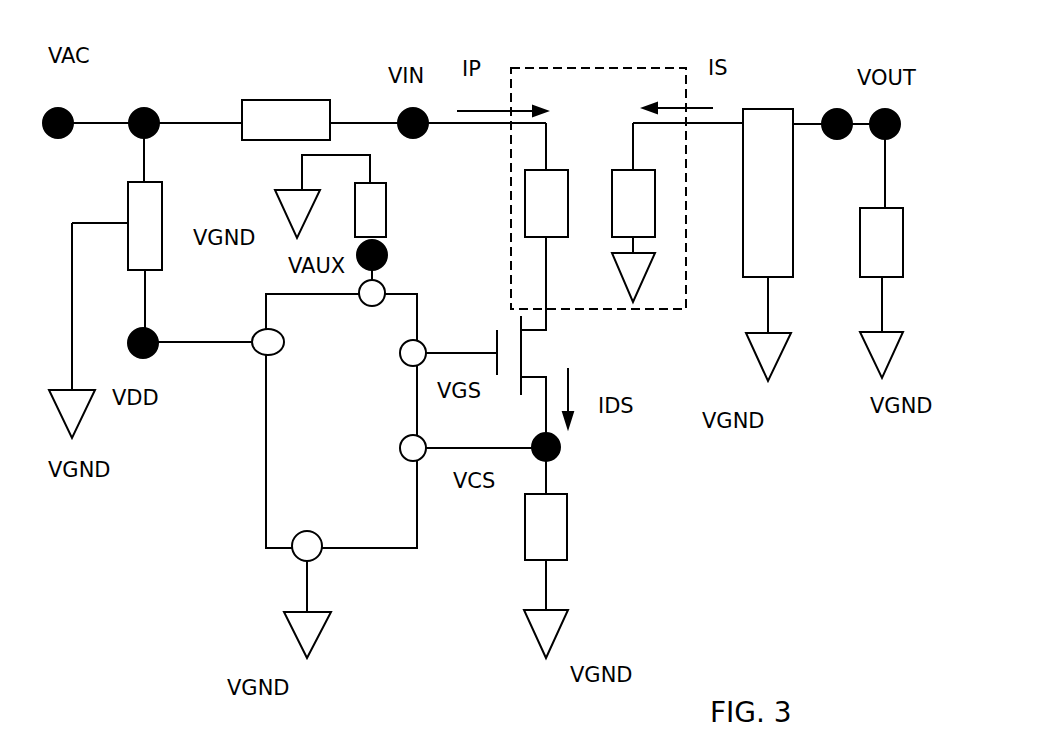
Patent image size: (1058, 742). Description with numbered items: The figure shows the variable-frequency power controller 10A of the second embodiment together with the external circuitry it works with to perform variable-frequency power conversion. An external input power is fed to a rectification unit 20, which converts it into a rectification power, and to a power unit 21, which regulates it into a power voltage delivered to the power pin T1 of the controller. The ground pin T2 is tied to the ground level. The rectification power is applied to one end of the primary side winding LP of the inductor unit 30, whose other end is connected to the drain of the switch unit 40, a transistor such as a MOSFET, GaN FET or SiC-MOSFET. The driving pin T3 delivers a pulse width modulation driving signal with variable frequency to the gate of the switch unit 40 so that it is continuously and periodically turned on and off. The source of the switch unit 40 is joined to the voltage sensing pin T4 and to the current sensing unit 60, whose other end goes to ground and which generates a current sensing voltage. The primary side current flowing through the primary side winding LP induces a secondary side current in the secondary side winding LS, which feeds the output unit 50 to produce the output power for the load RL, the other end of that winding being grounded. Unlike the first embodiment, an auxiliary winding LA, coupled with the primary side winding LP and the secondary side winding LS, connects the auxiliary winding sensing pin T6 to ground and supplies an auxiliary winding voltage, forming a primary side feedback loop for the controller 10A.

The rectification unit 20 is at (303, 100).
The power unit 21 is at (163, 230).
The inductor unit 30 is at (510, 278).
The switch unit 40 is at (539, 357).
The output unit 50 is at (755, 105).
The current sensing unit 60 is at (563, 538).
The variable-frequency power controller 10A is at (417, 515).
The auxiliary winding LA is at (383, 223).
The primary side winding LP is at (528, 208).
The secondary side winding LS is at (657, 218).
The load RL is at (890, 208).
The power pin T1 is at (253, 327).
The ground pin T2 is at (300, 550).
The driving pin T3 is at (427, 342).
The voltage sensing pin T4 is at (428, 445).
The auxiliary winding sensing pin T6 is at (383, 280).